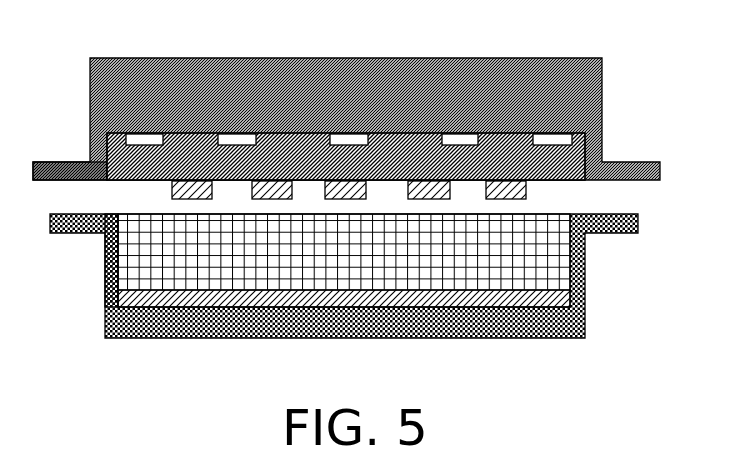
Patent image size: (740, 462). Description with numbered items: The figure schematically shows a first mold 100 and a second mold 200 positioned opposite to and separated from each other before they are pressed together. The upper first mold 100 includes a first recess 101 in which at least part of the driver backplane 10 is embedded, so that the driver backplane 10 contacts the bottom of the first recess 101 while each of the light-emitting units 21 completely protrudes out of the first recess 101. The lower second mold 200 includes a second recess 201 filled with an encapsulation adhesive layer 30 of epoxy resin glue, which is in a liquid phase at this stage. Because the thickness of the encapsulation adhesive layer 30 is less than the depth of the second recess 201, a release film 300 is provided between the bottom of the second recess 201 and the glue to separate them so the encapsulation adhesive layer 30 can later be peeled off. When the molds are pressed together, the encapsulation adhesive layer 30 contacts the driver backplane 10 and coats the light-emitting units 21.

The first mold 100 is at (238, 58).
The first recess 101 is at (110, 167).
The driver backplane 10 is at (410, 140).
The light-emitting units 21 is at (507, 140).
The second mold 200 is at (220, 320).
The second recess 201 is at (120, 268).
The encapsulation adhesive layer 30 is at (400, 300).
The release film 300 is at (283, 300).